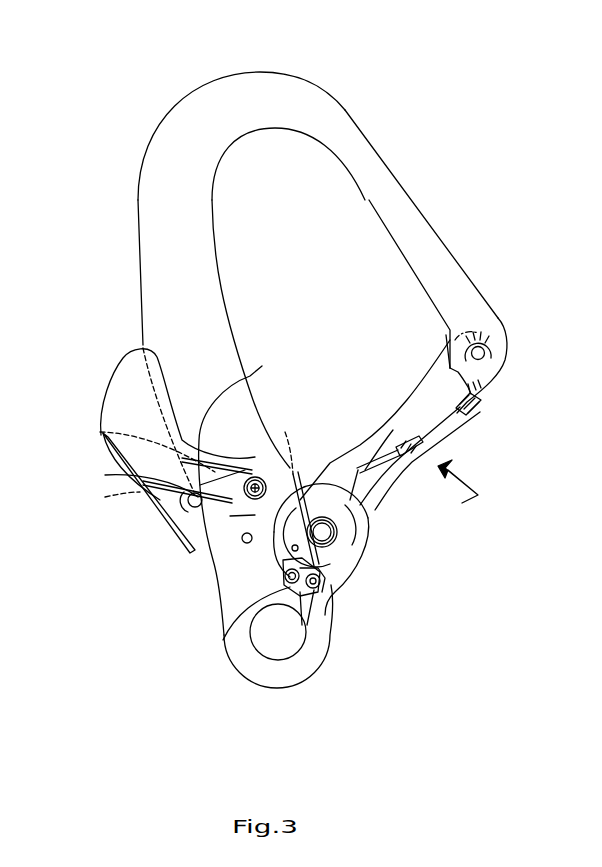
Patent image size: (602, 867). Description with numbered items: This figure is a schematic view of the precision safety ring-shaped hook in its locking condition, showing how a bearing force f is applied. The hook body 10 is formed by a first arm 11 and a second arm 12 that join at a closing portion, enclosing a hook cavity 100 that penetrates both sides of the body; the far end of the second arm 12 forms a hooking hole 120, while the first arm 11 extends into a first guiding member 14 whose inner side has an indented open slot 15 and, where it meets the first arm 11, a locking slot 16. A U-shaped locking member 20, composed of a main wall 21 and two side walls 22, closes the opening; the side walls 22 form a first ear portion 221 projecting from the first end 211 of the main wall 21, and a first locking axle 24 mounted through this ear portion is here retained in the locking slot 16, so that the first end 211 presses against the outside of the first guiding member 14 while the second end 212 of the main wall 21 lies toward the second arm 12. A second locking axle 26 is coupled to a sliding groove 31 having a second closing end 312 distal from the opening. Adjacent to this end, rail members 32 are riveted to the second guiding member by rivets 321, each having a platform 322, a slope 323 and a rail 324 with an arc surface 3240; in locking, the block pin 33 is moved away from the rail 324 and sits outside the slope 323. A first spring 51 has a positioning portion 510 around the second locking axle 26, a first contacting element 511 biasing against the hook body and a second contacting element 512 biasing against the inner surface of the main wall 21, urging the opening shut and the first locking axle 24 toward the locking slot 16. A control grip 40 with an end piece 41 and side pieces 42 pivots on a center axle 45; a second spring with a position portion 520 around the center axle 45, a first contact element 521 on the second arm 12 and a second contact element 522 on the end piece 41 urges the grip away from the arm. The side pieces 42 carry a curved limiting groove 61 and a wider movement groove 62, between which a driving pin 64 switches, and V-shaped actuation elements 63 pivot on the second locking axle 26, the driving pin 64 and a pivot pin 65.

The hook body 10 is at (333, 62).
The hook cavity 100 is at (260, 157).
The first arm 11 is at (372, 163).
The second arm 12 is at (153, 215).
The first guiding member 14 is at (507, 337).
The open slot 15 is at (445, 364).
The locking slot 16 is at (490, 333).
The first locking axle 24 is at (480, 356).
The first ear portion 221 is at (447, 367).
The first end of the main wall 211 is at (481, 395).
The main wall 21 is at (452, 422).
The locking member 20 is at (393, 387).
The side walls 22 is at (393, 430).
The second contacting element 512 is at (392, 478).
The actuation elements 63 is at (362, 488).
The second end of the main wall 212 is at (366, 505).
The force direction f is at (468, 490).
The first spring 51 is at (308, 498).
The second locking axle 26 is at (326, 532).
The positioning portion 510 is at (340, 495).
The sliding groove 31 is at (342, 548).
The first contacting element 511 is at (297, 475).
The position portion 520 is at (287, 438).
The slope 323 is at (285, 577).
The arc surface 3240 is at (306, 584).
The second closing end 312 is at (326, 584).
The rail members 32 is at (326, 607).
The rivets 321 is at (314, 592).
The platform 322 is at (302, 592).
The block pin 33 is at (278, 568).
The hooking hole 120 is at (268, 633).
The center axle 45 is at (242, 538).
The rail 324 is at (230, 518).
The control grip 40 is at (92, 460).
The side pieces 42 is at (123, 386).
The first contact element 521 is at (100, 432).
The second contact element 522 is at (105, 497).
The driving pin 64 is at (120, 476).
The movement groove 62 is at (187, 502).
The pivot pin 65 is at (255, 478).
The limiting groove 61 is at (239, 494).
The end piece 41 is at (200, 485).